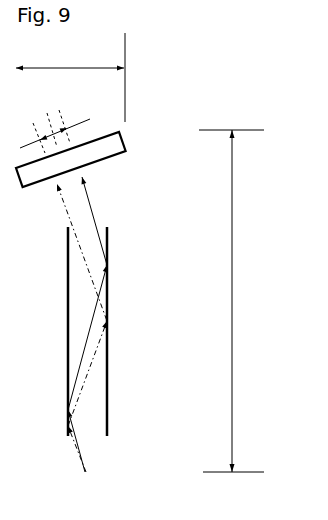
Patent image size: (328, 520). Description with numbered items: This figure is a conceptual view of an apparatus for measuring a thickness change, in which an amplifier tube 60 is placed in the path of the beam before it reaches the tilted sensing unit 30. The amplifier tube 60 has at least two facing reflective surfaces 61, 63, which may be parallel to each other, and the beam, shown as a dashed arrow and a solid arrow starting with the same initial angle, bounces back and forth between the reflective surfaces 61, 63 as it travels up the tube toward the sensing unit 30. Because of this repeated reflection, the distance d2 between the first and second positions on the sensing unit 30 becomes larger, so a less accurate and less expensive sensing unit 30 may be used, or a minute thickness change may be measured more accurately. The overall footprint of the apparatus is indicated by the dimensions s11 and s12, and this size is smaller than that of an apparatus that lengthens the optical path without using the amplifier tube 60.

The sensing unit 30 is at (117, 137).
The amplifier tube 60 is at (165, 361).
The reflective surface 61 is at (68, 355).
The reflective surface 63 is at (108, 334).
The apparatus size dimension s11 is at (70, 77).
The apparatus size dimension s12 is at (241, 301).
The distance between first and second positions d2 is at (55, 124).